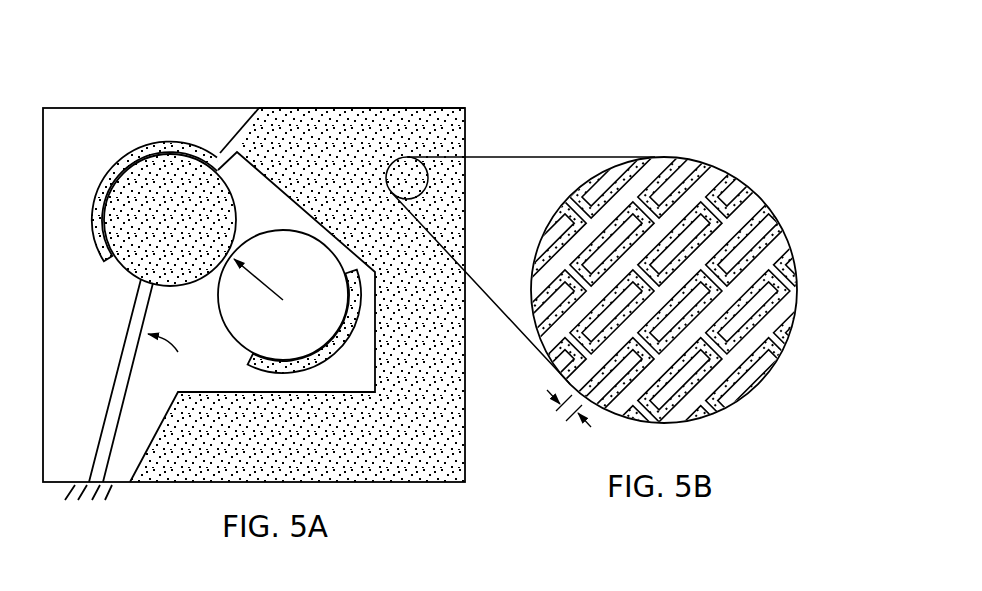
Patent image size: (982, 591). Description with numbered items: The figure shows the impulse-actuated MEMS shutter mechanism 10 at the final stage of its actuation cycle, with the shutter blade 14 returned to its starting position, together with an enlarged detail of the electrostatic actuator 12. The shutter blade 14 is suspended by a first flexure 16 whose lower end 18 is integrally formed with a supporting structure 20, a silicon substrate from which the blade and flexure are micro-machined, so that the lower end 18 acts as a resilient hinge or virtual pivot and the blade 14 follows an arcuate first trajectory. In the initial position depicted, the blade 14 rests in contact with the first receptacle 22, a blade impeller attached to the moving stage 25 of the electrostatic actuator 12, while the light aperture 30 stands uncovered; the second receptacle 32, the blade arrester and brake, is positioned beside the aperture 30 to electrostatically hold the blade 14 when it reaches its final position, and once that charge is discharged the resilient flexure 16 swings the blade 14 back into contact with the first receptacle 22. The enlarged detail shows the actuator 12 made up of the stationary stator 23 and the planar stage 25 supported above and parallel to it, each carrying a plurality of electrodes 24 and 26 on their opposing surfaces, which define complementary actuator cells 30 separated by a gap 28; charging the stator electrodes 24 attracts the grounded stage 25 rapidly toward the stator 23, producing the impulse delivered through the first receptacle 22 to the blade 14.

In FIG. 5A, the impulse-actuated MEMS shutter mechanism 10 is at (155, 48).
In FIG. 5A, the electrostatic actuator 12 is at (441, 90).
In FIG. 5A, the shutter blade 14 is at (130, 276).
In FIG. 5A, the first flexure 16 is at (119, 364).
In FIG. 5A, the lower end 18 is at (87, 477).
In FIG. 5A, the supporting structure 20 is at (106, 478).
In FIG. 5A, the first receptacle 22 is at (131, 152).
In FIG. 5A, the stator 23 is at (208, 108).
In FIG. 5A, the stage 25 is at (280, 108).
In FIG. 5A, the light aperture 30 is at (285, 348).
In FIG. 5B, the light aperture 30 is at (757, 320).
In FIG. 5A, the second receptacle 32 is at (322, 362).
In FIG. 5B, the electrodes 24 is at (712, 177).
In FIG. 5B, the electrodes 26 is at (773, 210).
In FIG. 5B, the gap 28 is at (560, 412).